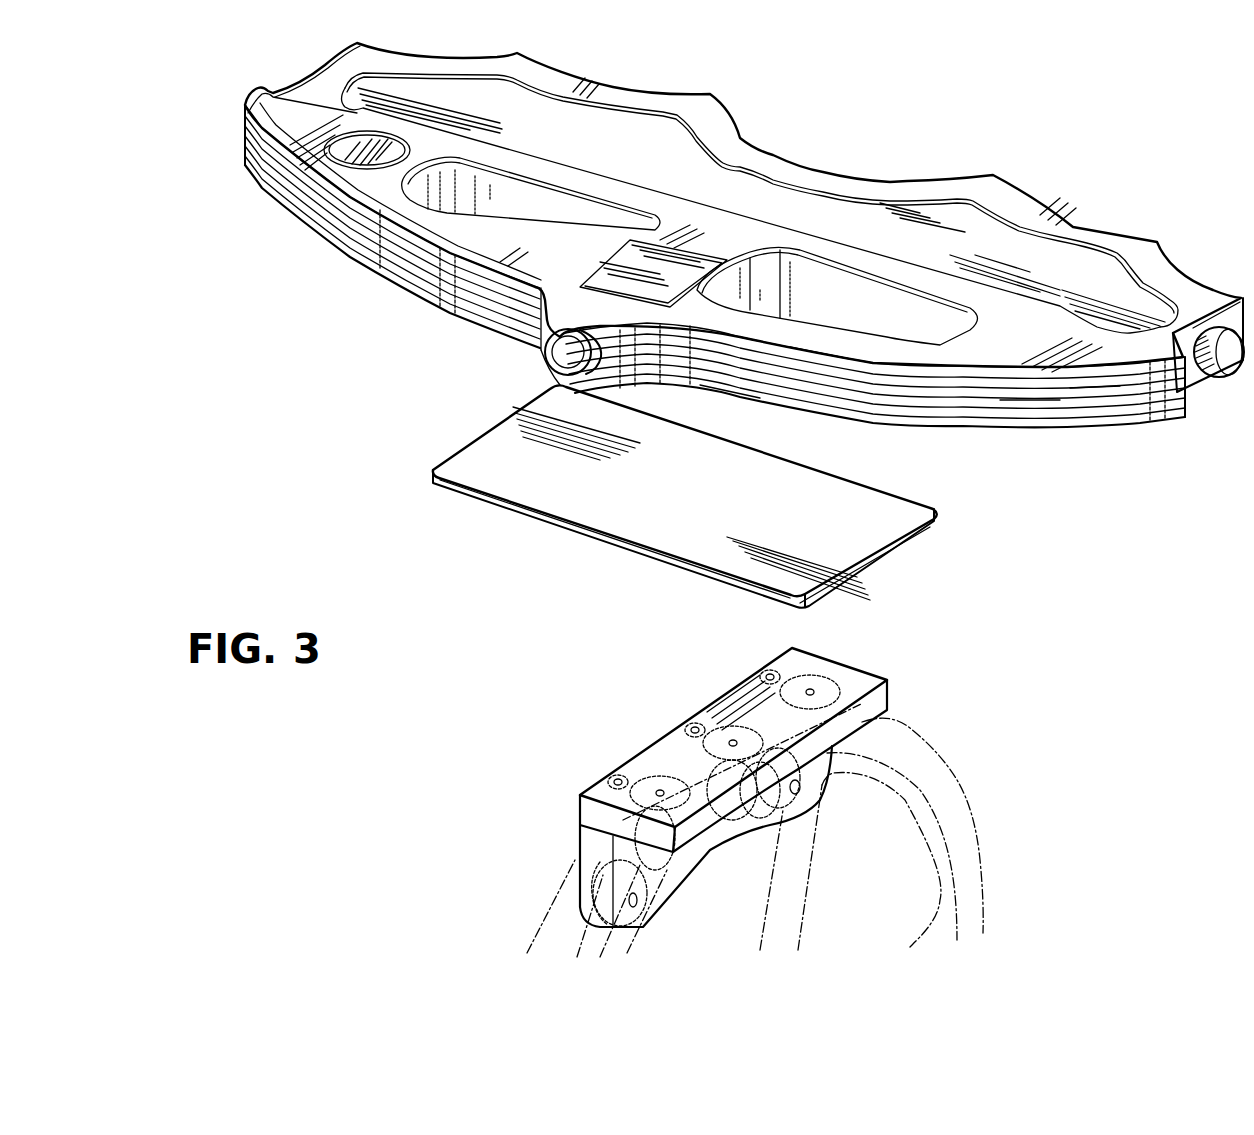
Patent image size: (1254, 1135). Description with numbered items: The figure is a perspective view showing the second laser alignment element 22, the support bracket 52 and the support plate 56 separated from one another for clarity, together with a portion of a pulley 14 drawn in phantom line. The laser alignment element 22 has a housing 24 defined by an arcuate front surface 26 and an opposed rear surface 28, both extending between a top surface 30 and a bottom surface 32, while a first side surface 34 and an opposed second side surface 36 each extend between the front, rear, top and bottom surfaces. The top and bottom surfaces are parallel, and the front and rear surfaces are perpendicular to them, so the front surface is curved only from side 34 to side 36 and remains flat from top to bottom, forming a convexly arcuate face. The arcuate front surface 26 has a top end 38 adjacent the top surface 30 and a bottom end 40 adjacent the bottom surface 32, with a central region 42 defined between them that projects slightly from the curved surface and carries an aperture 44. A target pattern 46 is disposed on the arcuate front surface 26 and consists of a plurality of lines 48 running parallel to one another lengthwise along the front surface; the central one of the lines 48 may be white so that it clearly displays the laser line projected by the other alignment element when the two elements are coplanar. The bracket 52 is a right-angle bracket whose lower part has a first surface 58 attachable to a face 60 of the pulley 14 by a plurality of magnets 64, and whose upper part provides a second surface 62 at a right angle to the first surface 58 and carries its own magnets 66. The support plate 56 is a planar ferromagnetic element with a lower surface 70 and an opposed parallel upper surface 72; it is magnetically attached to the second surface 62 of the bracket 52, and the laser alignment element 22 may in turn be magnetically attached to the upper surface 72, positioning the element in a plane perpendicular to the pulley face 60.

The pulley 14 is at (917, 758).
The second laser alignment element 22 is at (1005, 125).
The housing 24 is at (1100, 217).
The arcuate front surface 26 is at (963, 420).
The rear surface 28 is at (820, 170).
The top surface 30 is at (727, 187).
The bottom surface 32 is at (869, 430).
The first side surface 34 is at (1193, 387).
The second side surface 36 is at (300, 75).
The top end 38 is at (820, 357).
The bottom end 40 is at (738, 397).
The central region 42 is at (545, 318).
The aperture 44 is at (560, 350).
The target pattern 46 is at (1034, 420).
The lines 48 is at (1092, 407).
The support bracket 52 is at (574, 835).
The support plate 56 is at (877, 557).
The first surface 58 is at (580, 873).
The face 60 is at (905, 722).
The second surface 62 is at (728, 710).
The magnets 64 is at (640, 883).
The magnets 66 is at (655, 793).
The lower surface 70 is at (863, 573).
The upper surface 72 is at (685, 494).